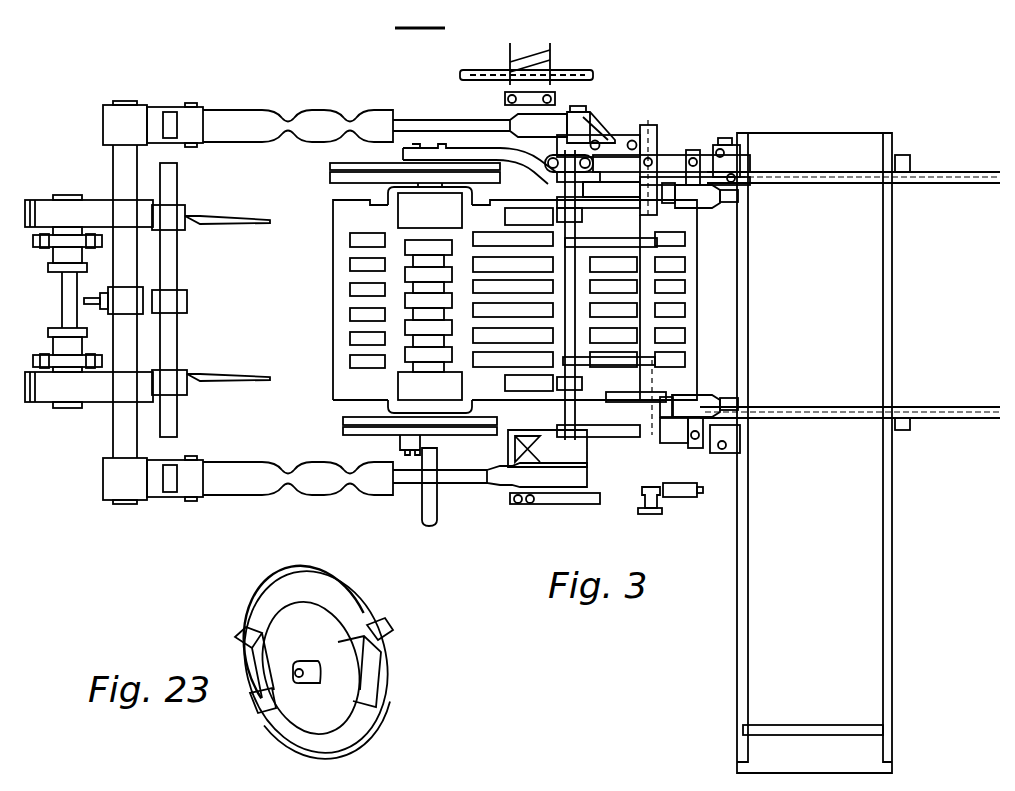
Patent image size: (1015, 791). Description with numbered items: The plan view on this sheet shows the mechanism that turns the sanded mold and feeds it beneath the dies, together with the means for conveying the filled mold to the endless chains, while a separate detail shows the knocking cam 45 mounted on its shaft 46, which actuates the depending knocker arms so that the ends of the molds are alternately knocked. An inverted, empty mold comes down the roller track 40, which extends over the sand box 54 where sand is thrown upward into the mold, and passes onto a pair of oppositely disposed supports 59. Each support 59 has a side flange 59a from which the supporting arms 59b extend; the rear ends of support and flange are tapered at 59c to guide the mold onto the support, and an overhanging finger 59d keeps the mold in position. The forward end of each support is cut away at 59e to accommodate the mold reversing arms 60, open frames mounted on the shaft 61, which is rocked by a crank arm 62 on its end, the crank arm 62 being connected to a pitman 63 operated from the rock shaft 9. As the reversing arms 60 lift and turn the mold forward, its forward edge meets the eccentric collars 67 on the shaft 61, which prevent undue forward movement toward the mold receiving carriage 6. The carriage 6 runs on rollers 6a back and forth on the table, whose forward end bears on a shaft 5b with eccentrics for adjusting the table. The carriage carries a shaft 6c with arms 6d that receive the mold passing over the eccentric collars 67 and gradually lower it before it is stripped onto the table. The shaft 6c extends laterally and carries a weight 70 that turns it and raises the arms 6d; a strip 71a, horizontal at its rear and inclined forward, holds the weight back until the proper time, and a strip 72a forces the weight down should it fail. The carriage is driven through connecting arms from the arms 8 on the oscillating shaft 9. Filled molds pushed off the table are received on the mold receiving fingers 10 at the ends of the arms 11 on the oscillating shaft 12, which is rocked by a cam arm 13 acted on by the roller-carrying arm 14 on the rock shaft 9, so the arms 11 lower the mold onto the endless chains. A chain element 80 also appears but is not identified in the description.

In FIG. 3, the oscillating shaft 9 is at (118, 175).
In FIG. 3, the arms 8 is at (156, 490).
In FIG. 3, the arms 11 is at (188, 214).
In FIG. 3, the mold receiving fingers 10 is at (248, 226).
In FIG. 3, the oscillating shaft 12 is at (172, 271).
In FIG. 3, the cam arm 13 is at (104, 292).
In FIG. 3, the arm 14 is at (125, 288).
In FIG. 3, the drive chain 80 is at (590, 72).
In FIG. 3, the mold reversing arms 60 is at (636, 142).
In FIG. 3, the supports 59 is at (702, 208).
In FIG. 3, the side flange 59a is at (690, 158).
In FIG. 3, the supporting arms 59b is at (658, 160).
In FIG. 3, the tapered rear end 59c is at (722, 197).
In FIG. 3, the overhanging finger 59d is at (680, 208).
In FIG. 3, the cut-away forward end 59e is at (615, 168).
In FIG. 3, the roller track 40 is at (856, 185).
In FIG. 3, the sand box 54 is at (823, 453).
In FIG. 3, the mold receiving carriage 6 is at (640, 278).
In FIG. 3, the rollers 6a is at (603, 247).
In FIG. 3, the shaft 6c is at (648, 312).
In FIG. 3, the arms 6d is at (598, 247).
In FIG. 3, the shaft 61 is at (565, 312).
In FIG. 3, the eccentric collars 67 is at (557, 216).
In FIG. 3, the shaft 5b is at (438, 505).
In FIG. 3, the pitman 63 is at (366, 488).
In FIG. 3, the crank arm 62 is at (522, 480).
In FIG. 3, the strip 72a is at (560, 505).
In FIG. 3, the strip 71a is at (633, 470).
In FIG. 3, the weight 70 is at (685, 499).
In FIG. 23, the knocking cam 45 is at (342, 602).
In FIG. 23, the shaft 46 is at (392, 626).